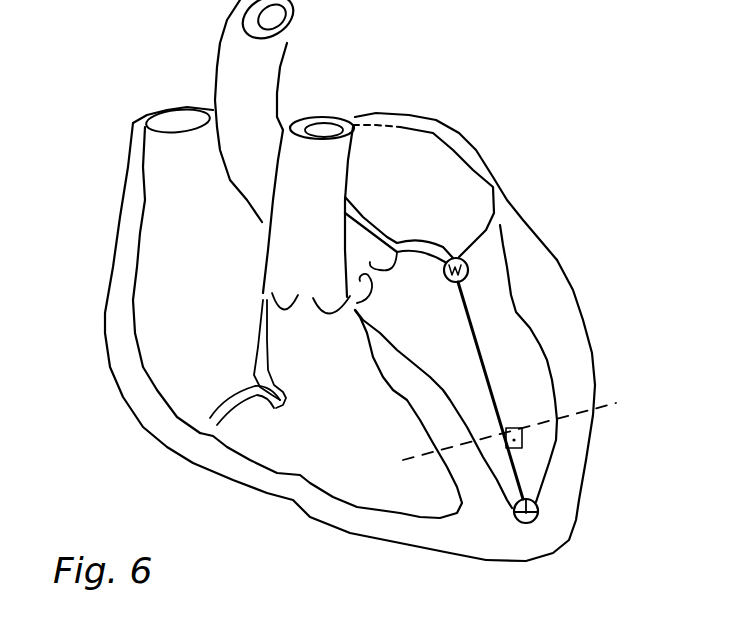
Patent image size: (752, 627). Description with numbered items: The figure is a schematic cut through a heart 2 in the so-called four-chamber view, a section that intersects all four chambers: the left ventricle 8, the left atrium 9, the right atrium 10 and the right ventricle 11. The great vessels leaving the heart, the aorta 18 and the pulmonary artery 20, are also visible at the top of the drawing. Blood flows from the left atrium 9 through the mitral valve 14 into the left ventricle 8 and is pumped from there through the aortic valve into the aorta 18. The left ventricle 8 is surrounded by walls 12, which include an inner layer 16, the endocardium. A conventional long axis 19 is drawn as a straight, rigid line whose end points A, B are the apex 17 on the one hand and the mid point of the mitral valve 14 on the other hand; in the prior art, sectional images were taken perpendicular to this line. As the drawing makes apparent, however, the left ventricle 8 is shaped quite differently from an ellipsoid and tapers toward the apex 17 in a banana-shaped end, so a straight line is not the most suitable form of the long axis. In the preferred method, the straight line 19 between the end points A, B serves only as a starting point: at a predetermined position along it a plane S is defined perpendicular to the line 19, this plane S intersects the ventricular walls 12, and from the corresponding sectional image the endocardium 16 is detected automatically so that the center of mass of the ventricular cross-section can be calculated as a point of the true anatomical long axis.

The heart 2 is at (625, 156).
The left ventricle 8 is at (430, 321).
The left atrium 9 is at (426, 163).
The right atrium 10 is at (167, 283).
The right ventricle 11 is at (310, 445).
The walls 12 is at (573, 463).
The mitral valve 14 is at (433, 240).
The inner layer 16 is at (537, 338).
The apex 17 is at (537, 546).
The aorta 18 is at (234, 66).
The long axis 19 is at (497, 402).
The pulmonary artery 20 is at (313, 160).
The end point A is at (539, 520).
The end point B is at (470, 265).
The plane S is at (526, 424).